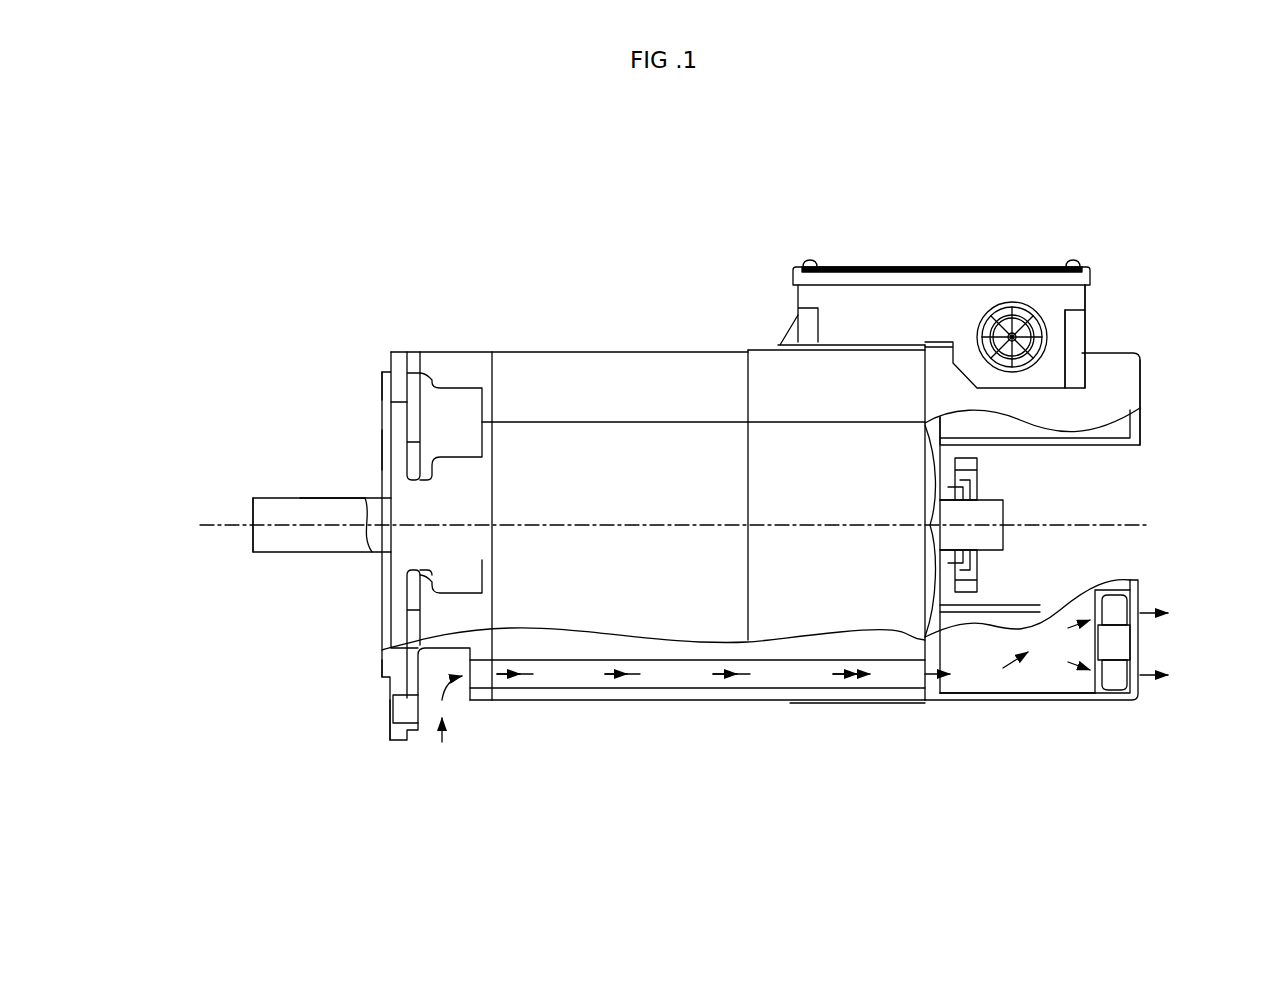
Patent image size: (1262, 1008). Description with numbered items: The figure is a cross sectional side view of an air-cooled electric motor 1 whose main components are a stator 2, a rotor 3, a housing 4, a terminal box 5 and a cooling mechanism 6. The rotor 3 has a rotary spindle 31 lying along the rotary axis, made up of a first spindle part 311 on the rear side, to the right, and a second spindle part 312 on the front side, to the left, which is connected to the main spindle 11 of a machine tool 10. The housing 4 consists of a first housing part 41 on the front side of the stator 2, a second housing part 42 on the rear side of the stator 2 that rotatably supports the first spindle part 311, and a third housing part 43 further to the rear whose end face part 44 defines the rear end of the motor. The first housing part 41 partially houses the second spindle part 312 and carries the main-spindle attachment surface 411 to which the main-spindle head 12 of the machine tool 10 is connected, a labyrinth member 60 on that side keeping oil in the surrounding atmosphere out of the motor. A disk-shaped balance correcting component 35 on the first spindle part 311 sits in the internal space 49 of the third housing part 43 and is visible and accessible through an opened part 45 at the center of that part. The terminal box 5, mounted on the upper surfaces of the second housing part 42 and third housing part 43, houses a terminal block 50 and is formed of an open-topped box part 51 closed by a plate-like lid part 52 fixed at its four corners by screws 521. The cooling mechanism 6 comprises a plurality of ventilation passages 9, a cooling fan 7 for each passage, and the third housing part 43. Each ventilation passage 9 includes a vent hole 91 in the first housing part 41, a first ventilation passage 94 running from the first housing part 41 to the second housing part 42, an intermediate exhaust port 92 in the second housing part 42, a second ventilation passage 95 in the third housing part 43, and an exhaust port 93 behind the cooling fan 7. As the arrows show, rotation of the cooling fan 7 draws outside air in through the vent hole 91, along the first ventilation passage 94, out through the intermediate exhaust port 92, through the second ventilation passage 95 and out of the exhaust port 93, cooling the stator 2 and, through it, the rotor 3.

The electric motor 1 is at (882, 154).
The machine tool 10 is at (330, 152).
The stator 2 is at (662, 370).
The rotor 3 is at (577, 455).
The rotary spindle 31 is at (295, 497).
The first spindle part 311 is at (995, 500).
The second spindle part 312 is at (340, 497).
The balance correcting component 35 is at (980, 575).
The housing 4 is at (396, 332).
The first housing part 41 is at (418, 352).
The main-spindle attachment surface 411 is at (385, 378).
The second housing part 42 is at (778, 350).
The third housing part 43 is at (1092, 350).
The end face part 44 is at (1147, 374).
The opened part 45 is at (1123, 508).
The internal space 49 is at (1110, 463).
The terminal box 5 is at (991, 256).
The terminal block 50 is at (948, 300).
The box part 51 is at (862, 300).
The lid part 52 is at (930, 265).
The screws 521 is at (1072, 262).
The cooling mechanism 6 is at (1062, 778).
The labyrinth member 60 is at (382, 457).
The cooling fan 7 is at (1105, 700).
The ventilation passage 9 is at (683, 677).
The vent hole 91 is at (462, 690).
The intermediate exhaust port 92 is at (935, 690).
The exhaust port 93 is at (1148, 700).
The first ventilation passage 94 is at (768, 677).
The second ventilation passage 95 is at (1013, 693).
The main spindle 11 is at (242, 553).
The main-spindle head 12 is at (362, 605).